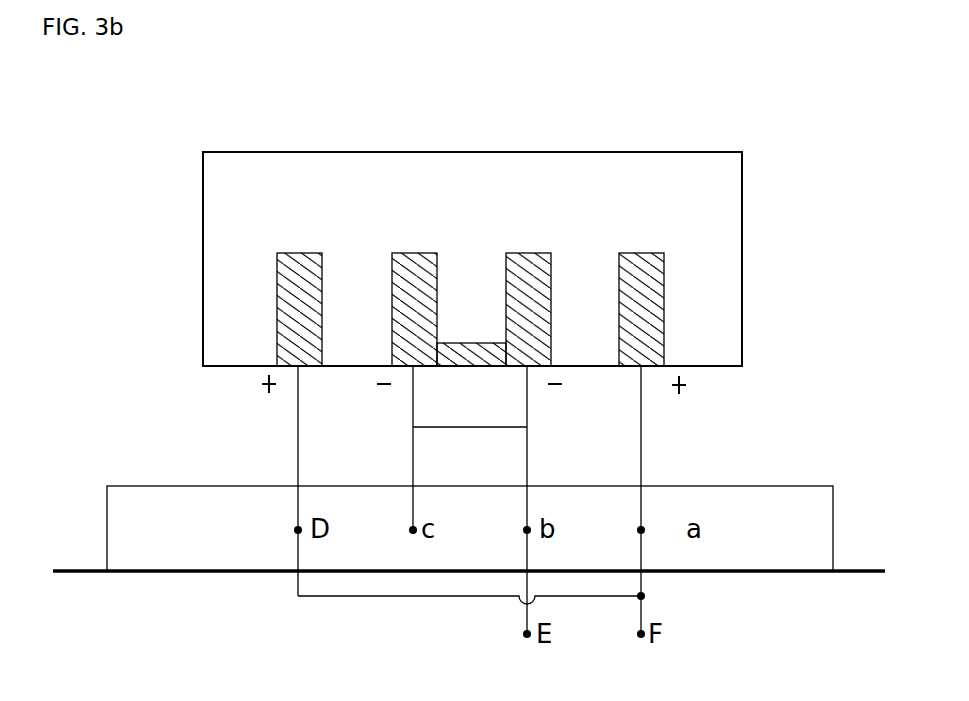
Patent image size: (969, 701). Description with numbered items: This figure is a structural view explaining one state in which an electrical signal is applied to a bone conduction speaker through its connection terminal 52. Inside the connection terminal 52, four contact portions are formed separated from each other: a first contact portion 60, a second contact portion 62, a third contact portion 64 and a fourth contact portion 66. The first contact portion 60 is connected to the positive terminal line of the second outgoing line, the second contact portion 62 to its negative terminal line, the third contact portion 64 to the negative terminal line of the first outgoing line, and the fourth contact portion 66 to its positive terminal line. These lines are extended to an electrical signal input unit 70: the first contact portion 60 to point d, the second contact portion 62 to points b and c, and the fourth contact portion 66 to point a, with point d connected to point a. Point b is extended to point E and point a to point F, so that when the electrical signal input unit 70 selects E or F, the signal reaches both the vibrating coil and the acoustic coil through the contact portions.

The connection terminal 52 is at (226, 231).
The first contact portion 60 is at (302, 277).
The second contact portion 62 is at (417, 277).
The third contact portion 64 is at (531, 277).
The fourth contact portion 66 is at (641, 277).
The electrical signal input unit 70 is at (157, 518).